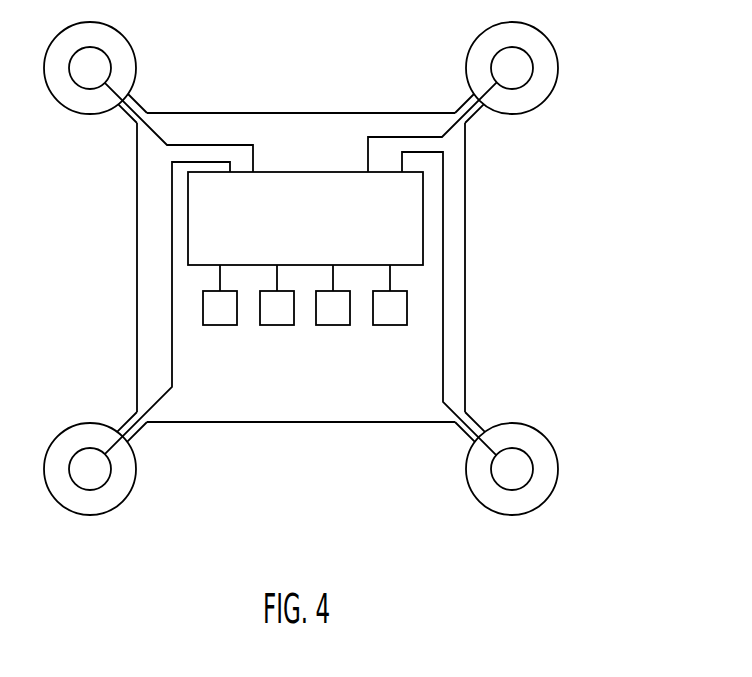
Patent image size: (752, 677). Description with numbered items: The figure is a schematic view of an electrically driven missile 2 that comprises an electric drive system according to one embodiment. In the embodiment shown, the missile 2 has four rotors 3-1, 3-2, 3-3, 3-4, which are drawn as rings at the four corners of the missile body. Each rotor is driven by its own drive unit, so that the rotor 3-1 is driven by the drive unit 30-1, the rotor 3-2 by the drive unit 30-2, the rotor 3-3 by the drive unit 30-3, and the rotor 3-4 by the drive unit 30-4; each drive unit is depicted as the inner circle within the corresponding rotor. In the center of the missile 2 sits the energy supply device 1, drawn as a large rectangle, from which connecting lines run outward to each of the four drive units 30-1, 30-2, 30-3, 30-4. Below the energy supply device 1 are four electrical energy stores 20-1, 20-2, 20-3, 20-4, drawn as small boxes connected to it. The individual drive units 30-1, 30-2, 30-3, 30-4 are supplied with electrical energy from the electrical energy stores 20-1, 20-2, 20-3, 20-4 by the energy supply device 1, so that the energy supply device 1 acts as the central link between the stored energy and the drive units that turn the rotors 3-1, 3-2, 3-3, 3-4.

The energy supply device 1 is at (290, 172).
The missile 2 is at (523, 280).
The rotor 3-1 is at (82, 515).
The rotor 3-2 is at (82, 113).
The rotor 3-3 is at (515, 113).
The rotor 3-4 is at (515, 515).
The drive unit 30-1 is at (110, 478).
The drive unit 30-2 is at (108, 60).
The drive unit 30-3 is at (535, 60).
The drive unit 30-4 is at (533, 478).
The electrical energy store 20-1 is at (220, 325).
The electrical energy store 20-2 is at (277, 325).
The electrical energy store 20-3 is at (333, 325).
The electrical energy store 20-4 is at (390, 325).